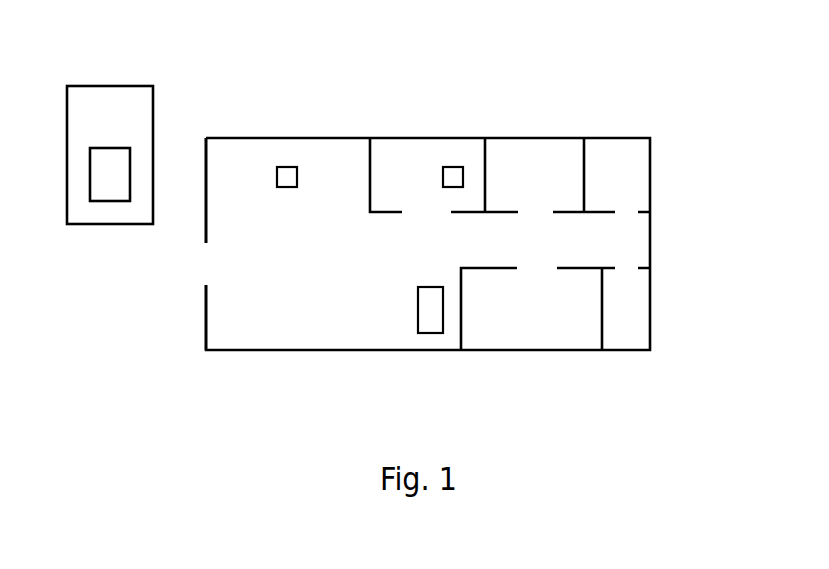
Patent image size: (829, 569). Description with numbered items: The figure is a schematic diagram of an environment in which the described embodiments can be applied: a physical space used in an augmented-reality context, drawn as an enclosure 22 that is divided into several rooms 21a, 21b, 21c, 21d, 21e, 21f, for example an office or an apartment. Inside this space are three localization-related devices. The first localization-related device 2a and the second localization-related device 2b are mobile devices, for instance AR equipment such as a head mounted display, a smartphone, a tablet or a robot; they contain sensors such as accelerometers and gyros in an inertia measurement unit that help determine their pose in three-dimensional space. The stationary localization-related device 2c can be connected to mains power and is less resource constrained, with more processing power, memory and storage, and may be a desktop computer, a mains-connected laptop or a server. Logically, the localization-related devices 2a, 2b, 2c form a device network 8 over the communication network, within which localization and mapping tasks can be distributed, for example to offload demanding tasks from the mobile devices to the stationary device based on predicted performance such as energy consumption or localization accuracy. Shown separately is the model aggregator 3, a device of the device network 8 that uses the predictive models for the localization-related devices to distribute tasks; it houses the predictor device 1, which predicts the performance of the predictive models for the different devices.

The device network 8 is at (630, 88).
The enclosure 22 is at (567, 243).
The room 21a is at (218, 329).
The room 21b is at (390, 152).
The room 21c is at (541, 148).
The room 21d is at (632, 173).
The room 21e is at (624, 332).
The room 21f is at (542, 332).
The first localization-related device 2a is at (287, 167).
The second localization-related device 2b is at (457, 167).
The stationary localization-related device 2c is at (431, 333).
The model aggregator 3 is at (119, 127).
The predictor device 1 is at (119, 187).